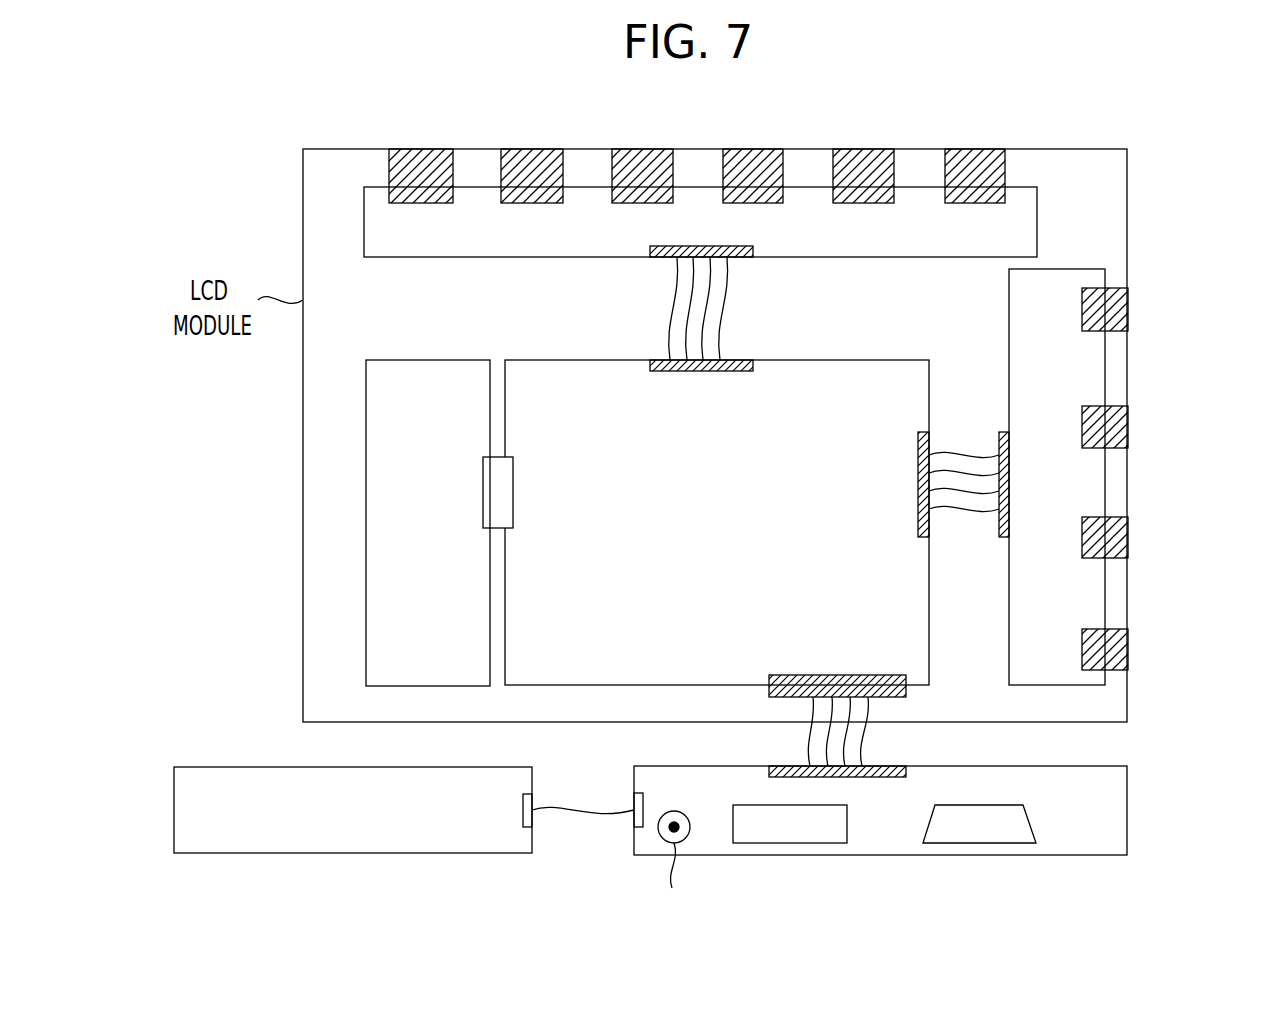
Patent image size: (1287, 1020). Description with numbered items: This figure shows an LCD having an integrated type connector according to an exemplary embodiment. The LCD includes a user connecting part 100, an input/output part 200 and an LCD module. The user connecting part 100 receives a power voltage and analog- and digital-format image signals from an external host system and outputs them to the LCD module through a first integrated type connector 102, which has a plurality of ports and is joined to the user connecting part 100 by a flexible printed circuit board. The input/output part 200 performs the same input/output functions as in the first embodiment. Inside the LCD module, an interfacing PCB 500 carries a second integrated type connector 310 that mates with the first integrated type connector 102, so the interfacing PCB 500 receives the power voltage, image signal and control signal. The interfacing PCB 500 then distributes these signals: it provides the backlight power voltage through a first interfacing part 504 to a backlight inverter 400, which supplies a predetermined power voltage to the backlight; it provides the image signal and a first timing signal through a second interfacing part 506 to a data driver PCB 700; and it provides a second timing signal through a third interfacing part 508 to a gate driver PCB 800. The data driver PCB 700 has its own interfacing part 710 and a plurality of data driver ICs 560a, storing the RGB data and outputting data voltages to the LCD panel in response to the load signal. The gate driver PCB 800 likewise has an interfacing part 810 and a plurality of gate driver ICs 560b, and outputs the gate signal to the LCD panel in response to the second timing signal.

The user connecting part 100 is at (1085, 857).
The first integrated type connector 102 is at (906, 697).
The input/output part 200 is at (237, 767).
The second integrated type connector 310 is at (876, 675).
The backlight inverter 400 is at (366, 470).
The interfacing PCB 500 is at (505, 360).
The first interfacing part 504 is at (753, 371).
The second interfacing part 506 is at (513, 489).
The third interfacing part 508 is at (918, 455).
The data driver ICs 560a is at (1020, 107).
The gate driver ICs 560b is at (1128, 305).
The data driver PCB 700 is at (1035, 193).
The interfacing part 710 is at (745, 257).
The gate driver PCB 800 is at (1090, 278).
The interfacing part 810 is at (999, 437).